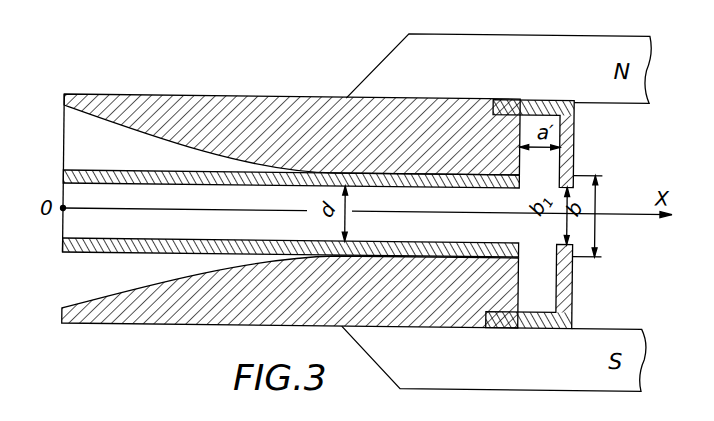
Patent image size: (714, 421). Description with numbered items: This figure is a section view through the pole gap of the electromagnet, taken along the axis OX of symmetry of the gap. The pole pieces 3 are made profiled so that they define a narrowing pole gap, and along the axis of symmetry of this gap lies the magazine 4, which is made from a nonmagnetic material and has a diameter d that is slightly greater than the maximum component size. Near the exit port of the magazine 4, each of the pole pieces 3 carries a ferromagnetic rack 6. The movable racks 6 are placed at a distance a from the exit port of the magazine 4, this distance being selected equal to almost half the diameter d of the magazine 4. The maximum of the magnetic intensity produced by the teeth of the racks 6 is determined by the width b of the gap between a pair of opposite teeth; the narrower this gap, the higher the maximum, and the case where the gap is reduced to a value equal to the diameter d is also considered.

The pole pieces 3 is at (172, 94).
The magazine 4 is at (104, 252).
The ferromagnetic rack 6 is at (575, 128).